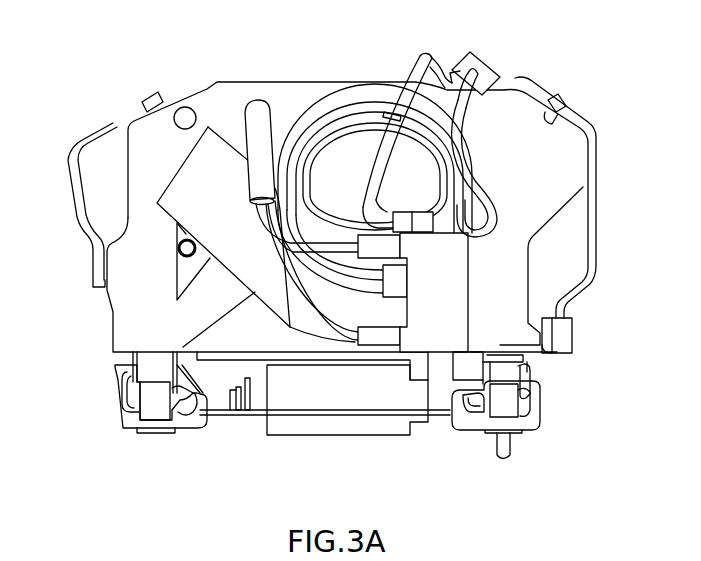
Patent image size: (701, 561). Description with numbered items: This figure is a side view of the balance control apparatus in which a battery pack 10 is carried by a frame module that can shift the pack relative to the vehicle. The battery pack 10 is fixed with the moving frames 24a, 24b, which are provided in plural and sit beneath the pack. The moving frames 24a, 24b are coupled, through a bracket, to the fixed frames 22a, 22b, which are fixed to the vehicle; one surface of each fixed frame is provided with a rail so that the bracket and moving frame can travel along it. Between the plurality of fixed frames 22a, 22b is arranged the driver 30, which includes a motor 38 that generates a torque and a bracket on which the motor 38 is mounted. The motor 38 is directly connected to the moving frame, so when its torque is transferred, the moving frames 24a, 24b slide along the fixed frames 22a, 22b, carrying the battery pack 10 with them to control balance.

The battery pack 10 is at (573, 85).
The fixed frame 22a is at (510, 413).
The fixed frame 22b is at (158, 418).
The moving frame 24a is at (507, 358).
The moving frame 24b is at (155, 363).
The driver 30 is at (217, 426).
The motor 38 is at (378, 400).